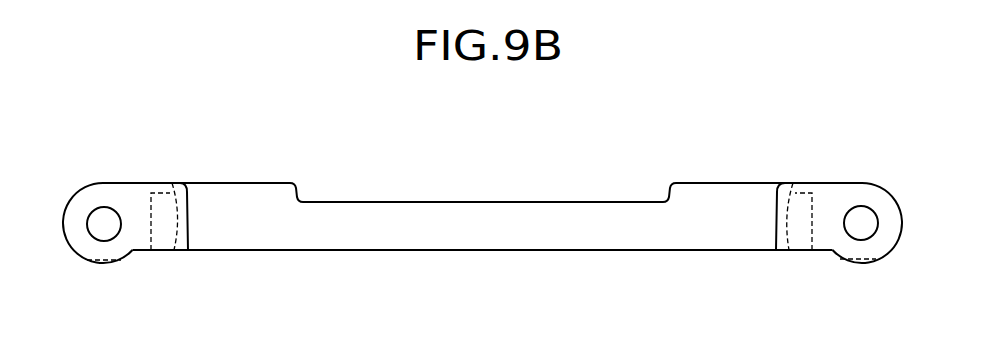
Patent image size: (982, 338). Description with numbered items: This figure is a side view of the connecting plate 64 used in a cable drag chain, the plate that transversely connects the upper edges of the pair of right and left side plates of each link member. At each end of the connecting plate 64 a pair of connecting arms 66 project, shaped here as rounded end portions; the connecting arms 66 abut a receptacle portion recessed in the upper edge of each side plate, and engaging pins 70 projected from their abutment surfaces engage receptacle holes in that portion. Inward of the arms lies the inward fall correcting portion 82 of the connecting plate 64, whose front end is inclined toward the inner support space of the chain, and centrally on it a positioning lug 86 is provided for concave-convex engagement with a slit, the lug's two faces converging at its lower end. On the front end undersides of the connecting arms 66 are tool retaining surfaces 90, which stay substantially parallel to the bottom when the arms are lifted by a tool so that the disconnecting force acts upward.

The connecting plate 64 is at (546, 166).
The connecting arms 66 is at (88, 196).
The engaging pins 70 is at (96, 233).
The inward fall correcting portion 82 is at (177, 183).
The positioning lug 86 is at (150, 200).
The tool retaining surfaces 90 is at (103, 265).